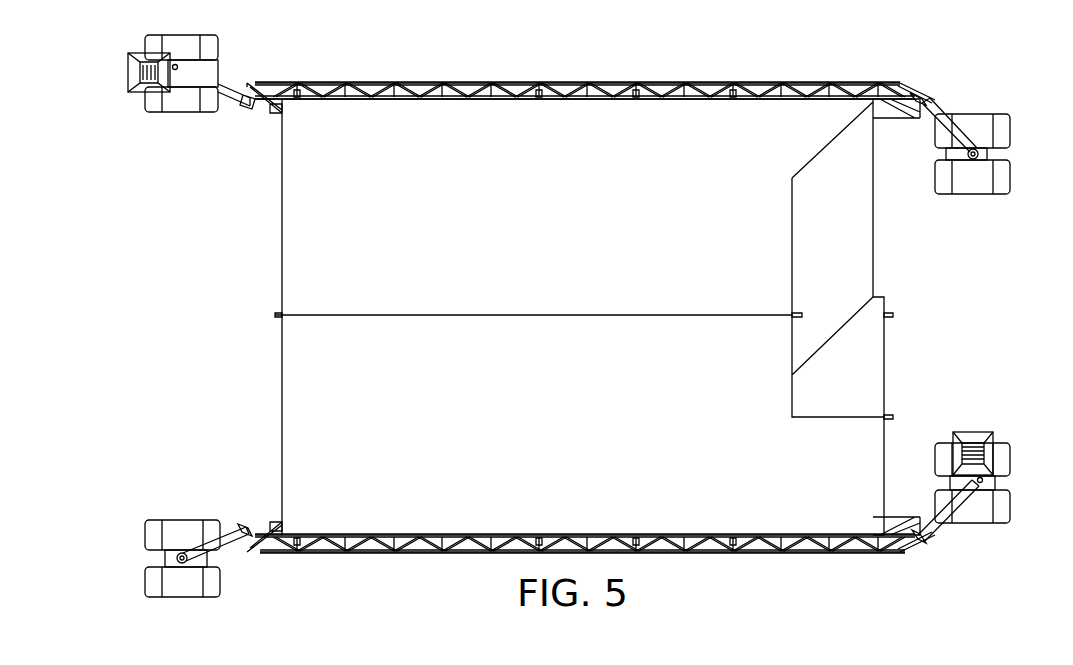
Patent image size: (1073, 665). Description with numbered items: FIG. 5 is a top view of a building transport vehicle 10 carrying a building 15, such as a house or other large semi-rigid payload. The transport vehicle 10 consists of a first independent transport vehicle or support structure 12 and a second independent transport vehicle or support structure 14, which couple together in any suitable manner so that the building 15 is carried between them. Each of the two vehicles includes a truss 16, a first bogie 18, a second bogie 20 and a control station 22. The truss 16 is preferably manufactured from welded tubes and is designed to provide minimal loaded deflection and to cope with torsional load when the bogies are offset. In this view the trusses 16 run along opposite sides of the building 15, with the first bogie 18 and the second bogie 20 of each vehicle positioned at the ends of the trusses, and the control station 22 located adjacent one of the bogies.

The building transport vehicle 10 is at (952, 321).
The first independent transport vehicle 12 is at (594, 72).
The second independent transport vehicle 14 is at (738, 558).
The building 15 is at (690, 115).
The truss 16 is at (525, 82).
The first bogie 18 is at (960, 130).
The second bogie 20 is at (180, 100).
The control station 22 is at (205, 75).